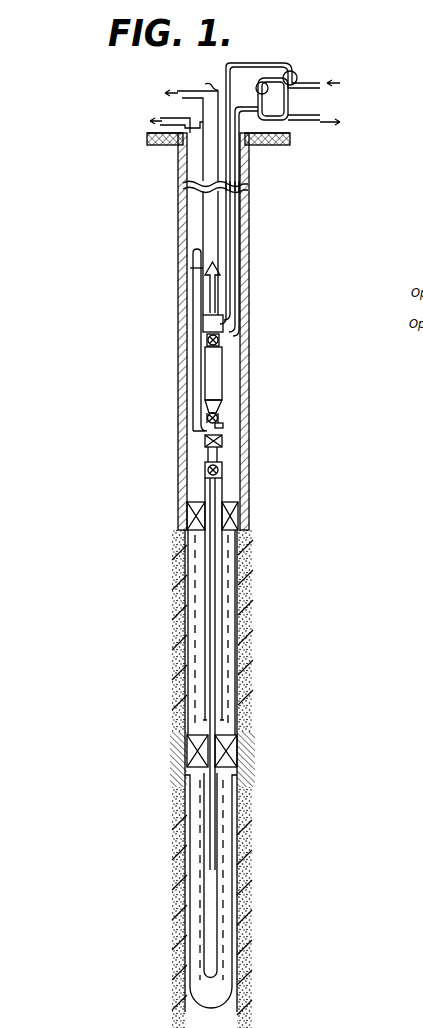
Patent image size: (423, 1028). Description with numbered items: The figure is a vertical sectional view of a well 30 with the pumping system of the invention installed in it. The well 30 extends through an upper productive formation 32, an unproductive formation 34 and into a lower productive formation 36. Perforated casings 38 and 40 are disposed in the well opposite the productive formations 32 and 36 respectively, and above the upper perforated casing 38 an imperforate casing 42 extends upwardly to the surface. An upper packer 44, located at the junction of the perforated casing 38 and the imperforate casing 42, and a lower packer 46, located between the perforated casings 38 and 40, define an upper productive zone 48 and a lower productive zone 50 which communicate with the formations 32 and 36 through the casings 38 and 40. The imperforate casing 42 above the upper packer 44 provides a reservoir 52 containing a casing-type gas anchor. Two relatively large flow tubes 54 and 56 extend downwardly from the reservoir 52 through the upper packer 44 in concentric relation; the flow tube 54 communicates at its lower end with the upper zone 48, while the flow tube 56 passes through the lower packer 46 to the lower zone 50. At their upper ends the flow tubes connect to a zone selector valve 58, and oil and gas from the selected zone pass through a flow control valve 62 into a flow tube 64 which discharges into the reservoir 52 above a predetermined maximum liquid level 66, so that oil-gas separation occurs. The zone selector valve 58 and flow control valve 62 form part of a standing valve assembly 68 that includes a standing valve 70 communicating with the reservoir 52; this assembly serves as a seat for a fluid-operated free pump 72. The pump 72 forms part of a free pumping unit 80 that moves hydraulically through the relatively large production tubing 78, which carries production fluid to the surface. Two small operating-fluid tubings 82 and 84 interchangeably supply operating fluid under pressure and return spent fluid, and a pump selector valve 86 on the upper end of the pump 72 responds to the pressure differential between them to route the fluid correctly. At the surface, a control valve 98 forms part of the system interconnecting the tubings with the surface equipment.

The well 30 is at (238, 912).
The upper productive formation 32 is at (174, 680).
The unproductive formation 34 is at (255, 752).
The lower productive formation 36 is at (166, 966).
The perforated casing 38 is at (245, 653).
The perforated casing 40 is at (235, 825).
The imperforate casing 42 is at (249, 492).
The upper packer 44 is at (181, 520).
The lower packer 46 is at (181, 752).
The upper productive zone 48 is at (190, 629).
The lower productive zone 50 is at (196, 900).
The reservoir 52 is at (233, 367).
The flow tube 54 is at (205, 603).
The flow tube 56 is at (205, 872).
The zone selector valve 58 is at (205, 470).
The flow control valve 62 is at (205, 443).
The flow tube 64 is at (198, 299).
The maximum liquid level 66 is at (193, 268).
The standing valve assembly 68 is at (230, 443).
The standing valve 70 is at (207, 418).
The free pump 72 is at (205, 378).
The production tubing 78 is at (203, 176).
The pumping unit 80 is at (228, 344).
The operating-fluid tubing 82 is at (233, 225).
The operating-fluid tubing 84 is at (245, 162).
The pump selector valve 86 is at (207, 341).
The control valve 98 is at (292, 71).